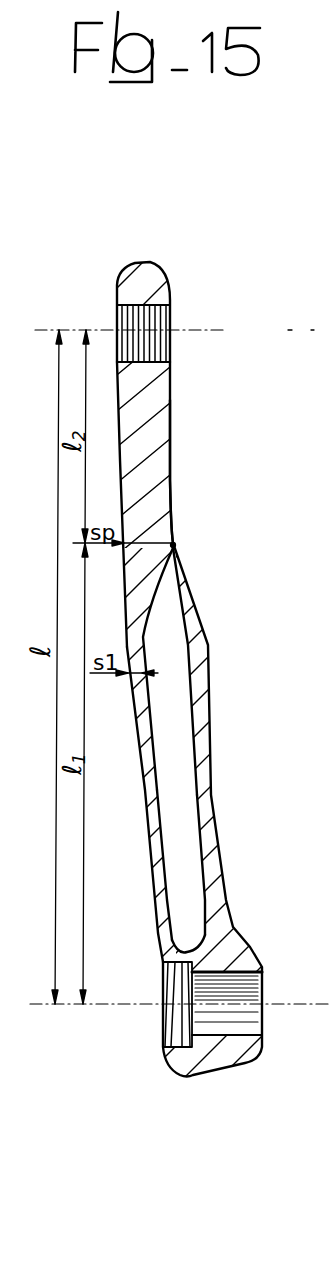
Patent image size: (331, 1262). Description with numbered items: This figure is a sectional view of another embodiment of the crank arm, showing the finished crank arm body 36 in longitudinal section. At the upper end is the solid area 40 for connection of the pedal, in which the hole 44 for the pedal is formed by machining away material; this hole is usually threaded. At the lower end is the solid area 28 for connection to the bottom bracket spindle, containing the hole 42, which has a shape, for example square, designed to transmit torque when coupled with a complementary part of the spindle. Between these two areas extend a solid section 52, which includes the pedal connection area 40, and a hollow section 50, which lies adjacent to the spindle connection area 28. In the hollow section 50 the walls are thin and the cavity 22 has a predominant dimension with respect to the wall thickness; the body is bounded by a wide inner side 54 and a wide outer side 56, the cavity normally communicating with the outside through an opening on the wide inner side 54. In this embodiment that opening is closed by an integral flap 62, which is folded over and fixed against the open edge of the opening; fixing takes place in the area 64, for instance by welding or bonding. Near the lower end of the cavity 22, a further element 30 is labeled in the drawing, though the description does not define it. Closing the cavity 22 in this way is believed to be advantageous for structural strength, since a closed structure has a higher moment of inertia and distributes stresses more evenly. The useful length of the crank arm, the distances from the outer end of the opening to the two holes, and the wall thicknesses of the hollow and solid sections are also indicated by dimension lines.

The cavity 22 is at (189, 798).
The solid area for connection to the bottom bracket spindle 28 is at (232, 943).
The coupling portion 30 is at (192, 945).
The crank arm body 36 is at (86, 296).
The solid area for connection of the pedal 40 is at (160, 383).
The hole for connection to the bottom bracket spindle 42 is at (262, 993).
The hole for connection of the pedal 44 is at (163, 317).
The hollow section 50 is at (214, 755).
The solid section 52 is at (186, 450).
The wide inner side 54 is at (208, 683).
The wide outer side 56 is at (133, 717).
The integral flap 62 is at (193, 592).
The fixing area 64 is at (175, 540).